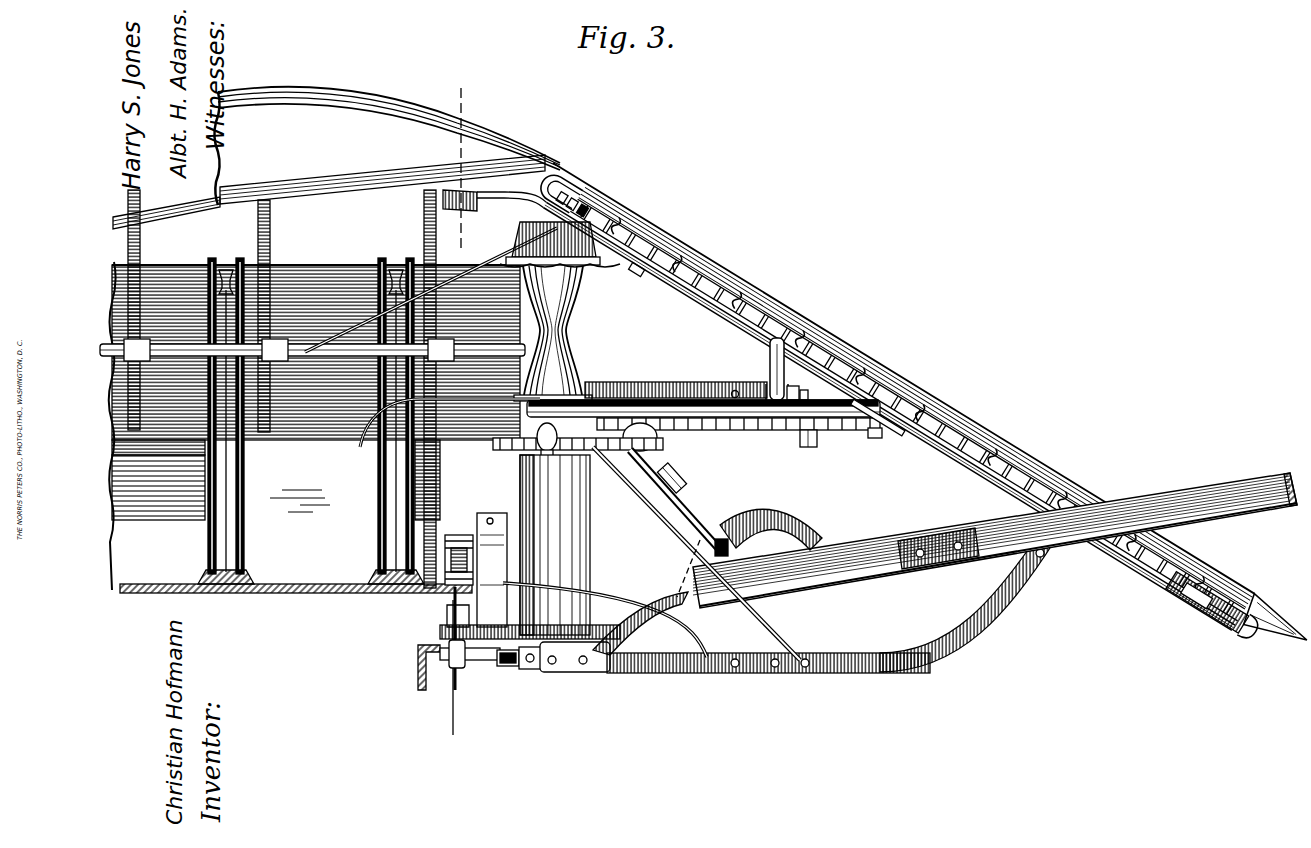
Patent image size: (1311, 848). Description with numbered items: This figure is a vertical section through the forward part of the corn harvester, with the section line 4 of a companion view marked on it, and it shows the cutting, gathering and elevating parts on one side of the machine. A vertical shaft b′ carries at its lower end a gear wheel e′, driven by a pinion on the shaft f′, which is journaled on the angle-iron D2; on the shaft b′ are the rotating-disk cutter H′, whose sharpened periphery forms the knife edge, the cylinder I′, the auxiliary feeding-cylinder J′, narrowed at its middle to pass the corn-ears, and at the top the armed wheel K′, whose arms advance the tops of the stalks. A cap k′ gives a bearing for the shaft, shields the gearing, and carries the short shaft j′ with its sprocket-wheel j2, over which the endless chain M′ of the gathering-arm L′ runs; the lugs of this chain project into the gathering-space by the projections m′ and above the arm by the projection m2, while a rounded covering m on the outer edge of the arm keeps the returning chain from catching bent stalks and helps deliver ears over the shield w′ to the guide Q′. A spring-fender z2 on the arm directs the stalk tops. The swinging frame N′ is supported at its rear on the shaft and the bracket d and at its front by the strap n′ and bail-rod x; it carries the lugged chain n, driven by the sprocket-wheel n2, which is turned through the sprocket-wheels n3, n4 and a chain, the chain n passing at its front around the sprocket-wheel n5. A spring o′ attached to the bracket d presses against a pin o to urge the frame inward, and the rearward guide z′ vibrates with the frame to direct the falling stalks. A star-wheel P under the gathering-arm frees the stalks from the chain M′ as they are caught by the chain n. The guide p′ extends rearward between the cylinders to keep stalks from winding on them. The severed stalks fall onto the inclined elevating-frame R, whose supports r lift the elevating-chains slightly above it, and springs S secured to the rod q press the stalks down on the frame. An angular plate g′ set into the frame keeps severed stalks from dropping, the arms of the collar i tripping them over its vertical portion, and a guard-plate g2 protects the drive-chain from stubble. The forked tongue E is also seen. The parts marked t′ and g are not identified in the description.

The inclined table or elevating-frame R is at (314, 427).
The guides or supports for the elevating-chains r is at (244, 560).
The springs S is at (140, 242).
The rod or shaft q is at (104, 280).
The inclined board t′ is at (329, 192).
The guide Q′ is at (460, 135).
The section line 4 4 is at (456, 414).
The spring-fender z2 is at (493, 197).
The sprocket-wheel j2 is at (511, 194).
The wheel with arms K′ is at (588, 270).
The auxiliary feeding-cylinder J′ is at (584, 318).
The gathering-arm L′ is at (975, 418).
The shield w′ is at (572, 183).
The cap k′ is at (580, 214).
The short shaft j′ is at (636, 220).
The projection m2 is at (772, 295).
The covering m is at (836, 360).
The projection m′ is at (740, 320).
The endless chain M′ is at (768, 392).
The bail-rod x is at (732, 393).
The link or strap n′ is at (770, 388).
The pin o is at (793, 390).
The spring o′ is at (676, 381).
The swinging bar or frame N′ is at (742, 428).
The sprocket-wheel n3 is at (665, 447).
The sprocket-wheel n4 is at (503, 450).
The bracket d is at (545, 452).
The chain n is at (790, 430).
The sprocket-wheel n5 is at (866, 432).
The star-wheel P is at (903, 395).
The cylinder I′ is at (590, 531).
The guide z′ is at (447, 439).
The pulley g is at (459, 612).
The angular plate g′ is at (447, 622).
The descending guard-plate g2 is at (420, 688).
The shaft f′ is at (480, 662).
The bar or angle-iron D2 is at (506, 668).
The gear wheel e′ is at (530, 670).
The vertical shaft b′ is at (562, 676).
The collar i is at (973, 593).
The tongue E is at (1280, 505).
The sprocket-wheel n2 is at (600, 456).
The guide p′ is at (600, 598).
The rotating-disk cutter H′ is at (600, 630).